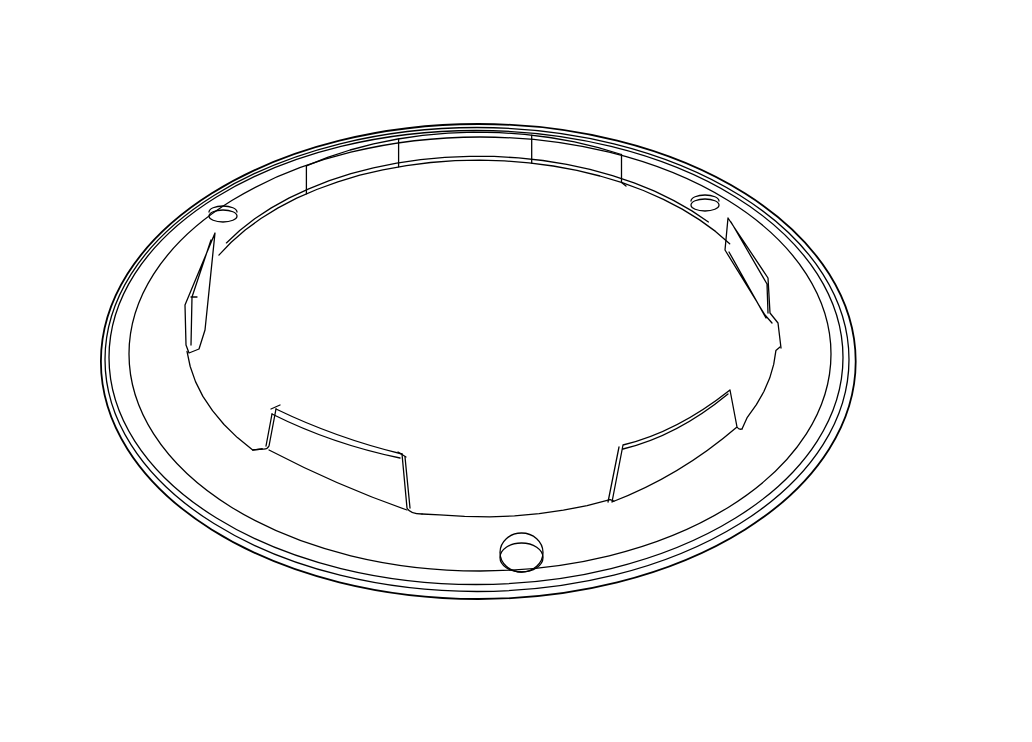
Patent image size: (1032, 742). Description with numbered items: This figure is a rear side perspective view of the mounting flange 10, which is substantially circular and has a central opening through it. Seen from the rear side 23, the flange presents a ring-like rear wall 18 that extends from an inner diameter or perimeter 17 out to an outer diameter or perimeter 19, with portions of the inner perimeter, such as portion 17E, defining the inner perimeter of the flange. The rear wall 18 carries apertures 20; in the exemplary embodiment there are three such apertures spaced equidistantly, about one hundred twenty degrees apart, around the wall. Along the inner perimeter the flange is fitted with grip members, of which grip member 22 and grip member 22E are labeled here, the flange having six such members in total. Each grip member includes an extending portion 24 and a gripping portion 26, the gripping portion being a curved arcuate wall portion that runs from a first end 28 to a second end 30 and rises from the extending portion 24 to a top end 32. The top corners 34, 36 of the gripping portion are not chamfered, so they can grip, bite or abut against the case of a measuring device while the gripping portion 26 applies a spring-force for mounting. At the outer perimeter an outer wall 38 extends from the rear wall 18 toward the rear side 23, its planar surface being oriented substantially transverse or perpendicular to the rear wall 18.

The mounting flange 10 is at (268, 38).
The inner diameter or perimeter 17 is at (274, 219).
The inner perimeter portion 17E is at (461, 173).
The rear wall 18 is at (780, 437).
The outer diameter or perimeter 19 is at (114, 439).
The aperture 20 is at (224, 205).
The grip member 22 is at (393, 178).
The grip member 22E is at (556, 182).
The rear side 23 is at (481, 98).
The extending portion 24 is at (287, 463).
The gripping portion 26 is at (483, 366).
The first end 28 is at (258, 416).
The second end 30 is at (425, 476).
The top end 32 is at (317, 408).
The top corner 34 is at (283, 395).
The top corner 36 is at (399, 441).
The outer wall 38 is at (262, 540).